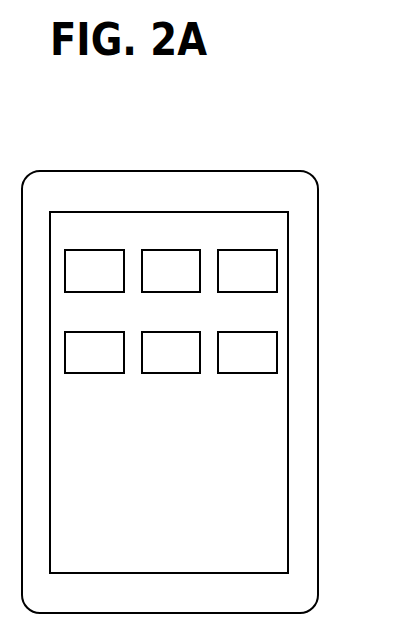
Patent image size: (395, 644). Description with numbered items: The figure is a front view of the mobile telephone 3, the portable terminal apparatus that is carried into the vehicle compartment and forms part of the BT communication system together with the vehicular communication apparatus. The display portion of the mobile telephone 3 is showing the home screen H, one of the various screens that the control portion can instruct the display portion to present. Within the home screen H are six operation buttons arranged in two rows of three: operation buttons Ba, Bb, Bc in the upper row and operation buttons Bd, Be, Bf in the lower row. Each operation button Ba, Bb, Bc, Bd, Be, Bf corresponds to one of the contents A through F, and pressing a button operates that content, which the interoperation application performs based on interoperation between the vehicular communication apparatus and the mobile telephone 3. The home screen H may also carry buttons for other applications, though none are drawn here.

The mobile telephone 3 is at (59, 171).
The home screen H is at (163, 231).
The operation button Ba is at (84, 292).
The operation button Bb is at (160, 292).
The operation button Bc is at (236, 292).
The operation button Bd is at (84, 373).
The operation button Be is at (160, 373).
The operation button Bf is at (236, 373).